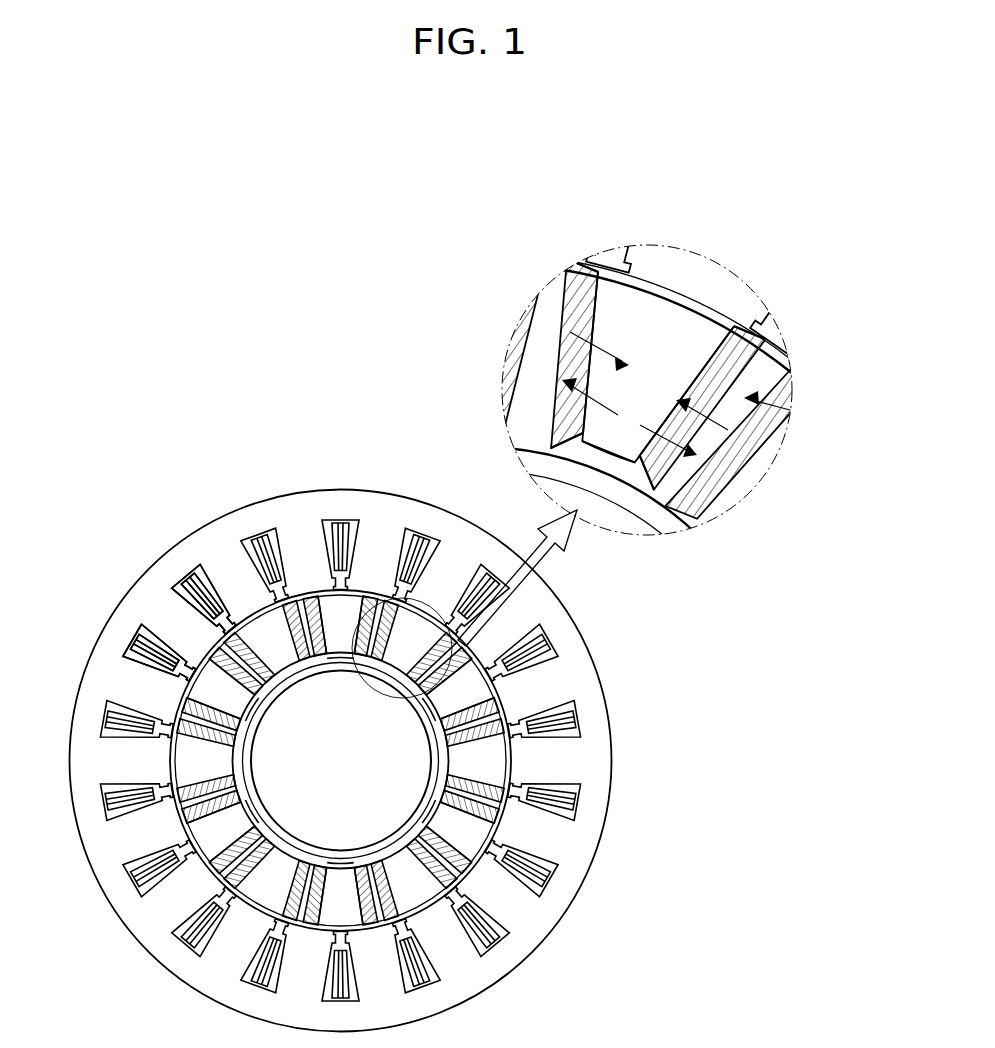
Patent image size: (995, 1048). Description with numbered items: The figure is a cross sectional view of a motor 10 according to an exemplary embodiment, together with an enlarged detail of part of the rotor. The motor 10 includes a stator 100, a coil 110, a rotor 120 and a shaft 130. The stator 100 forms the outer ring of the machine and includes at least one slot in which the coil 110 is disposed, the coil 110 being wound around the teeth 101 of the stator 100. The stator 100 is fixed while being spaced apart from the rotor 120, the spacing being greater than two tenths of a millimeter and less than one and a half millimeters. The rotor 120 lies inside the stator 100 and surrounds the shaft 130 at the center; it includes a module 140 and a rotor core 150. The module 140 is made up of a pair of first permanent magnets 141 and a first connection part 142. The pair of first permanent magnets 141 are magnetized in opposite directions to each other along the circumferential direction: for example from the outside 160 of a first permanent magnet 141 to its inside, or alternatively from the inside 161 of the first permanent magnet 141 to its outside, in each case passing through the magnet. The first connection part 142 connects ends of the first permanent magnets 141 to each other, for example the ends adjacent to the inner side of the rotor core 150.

The motor 10 is at (137, 513).
The stator 100 is at (298, 512).
The teeth 101 is at (177, 632).
The coil 110 is at (260, 540).
The rotor 120 is at (514, 757).
The shaft 130 is at (322, 818).
The module 140 is at (772, 402).
The first permanent magnets 141 is at (735, 337).
The first connection part 142 is at (584, 444).
The rotor core 150 is at (733, 482).
The outside of the first permanent magnet 160 is at (592, 296).
The inside of the first permanent magnet 161 is at (646, 482).